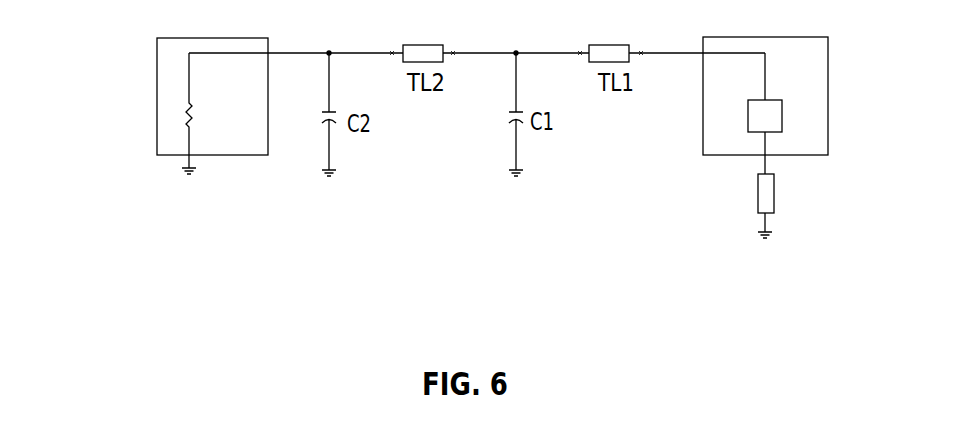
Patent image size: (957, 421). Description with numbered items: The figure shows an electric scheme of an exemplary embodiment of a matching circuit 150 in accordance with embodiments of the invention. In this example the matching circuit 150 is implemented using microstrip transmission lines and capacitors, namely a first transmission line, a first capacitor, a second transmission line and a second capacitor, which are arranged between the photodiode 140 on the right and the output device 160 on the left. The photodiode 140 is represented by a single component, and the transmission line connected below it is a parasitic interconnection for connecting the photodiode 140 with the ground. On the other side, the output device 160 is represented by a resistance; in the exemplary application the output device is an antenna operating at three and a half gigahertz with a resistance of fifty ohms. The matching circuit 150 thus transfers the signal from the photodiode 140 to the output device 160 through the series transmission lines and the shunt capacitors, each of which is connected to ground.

The photodiode 140 is at (823, 157).
The matching circuit 150 is at (323, 249).
The output device 160 is at (173, 155).